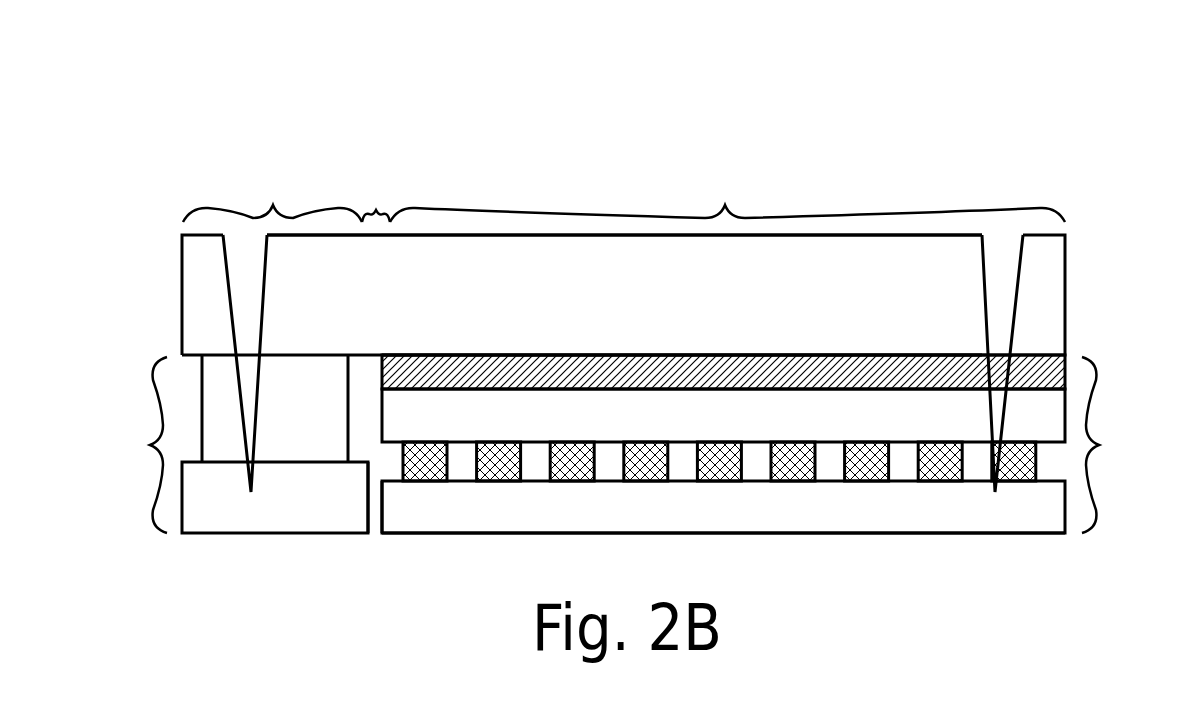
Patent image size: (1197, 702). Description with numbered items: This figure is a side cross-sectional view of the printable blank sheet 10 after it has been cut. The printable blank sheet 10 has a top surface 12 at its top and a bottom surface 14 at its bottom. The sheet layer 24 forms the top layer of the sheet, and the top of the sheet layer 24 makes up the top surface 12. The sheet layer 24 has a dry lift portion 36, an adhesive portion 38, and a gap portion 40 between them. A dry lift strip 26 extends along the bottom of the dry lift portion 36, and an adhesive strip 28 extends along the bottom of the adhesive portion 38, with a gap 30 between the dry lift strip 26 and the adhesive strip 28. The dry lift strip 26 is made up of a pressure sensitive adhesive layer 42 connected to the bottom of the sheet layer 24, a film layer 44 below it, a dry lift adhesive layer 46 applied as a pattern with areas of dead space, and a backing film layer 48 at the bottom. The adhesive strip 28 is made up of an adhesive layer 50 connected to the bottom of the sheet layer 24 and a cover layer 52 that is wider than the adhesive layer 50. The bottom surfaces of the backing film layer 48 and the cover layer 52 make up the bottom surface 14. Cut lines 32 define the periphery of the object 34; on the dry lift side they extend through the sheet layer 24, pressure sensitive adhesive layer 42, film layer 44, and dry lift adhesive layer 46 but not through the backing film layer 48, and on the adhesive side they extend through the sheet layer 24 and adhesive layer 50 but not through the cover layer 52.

The printable blank sheet 10 is at (258, 70).
The top surface 12 is at (833, 235).
The bottom surface 14 is at (290, 533).
The sheet layer 24 is at (1043, 265).
The dry lift strip 26 is at (1106, 445).
The adhesive strip 28 is at (143, 445).
The gap 30 is at (374, 523).
The cut lines 32 is at (260, 300).
The object 34 is at (523, 302).
The dry lift portion 36 is at (727, 201).
The adhesive portion 38 is at (272, 201).
The gap portion 40 is at (376, 204).
The pressure sensitive adhesive layer 42 is at (1050, 365).
The film layer 44 is at (1030, 413).
The dry lift adhesive layer 46 is at (1015, 460).
The backing film layer 48 is at (1022, 505).
The adhesive layer 50 is at (208, 378).
The cover layer 52 is at (215, 510).